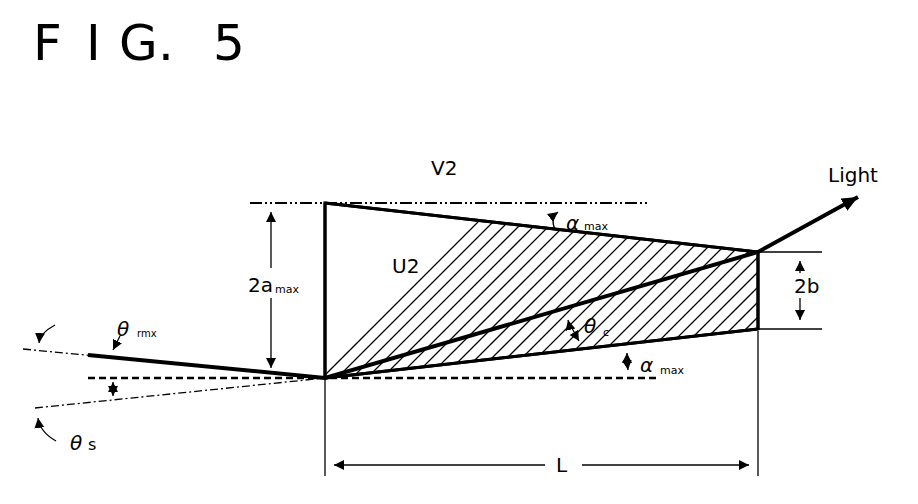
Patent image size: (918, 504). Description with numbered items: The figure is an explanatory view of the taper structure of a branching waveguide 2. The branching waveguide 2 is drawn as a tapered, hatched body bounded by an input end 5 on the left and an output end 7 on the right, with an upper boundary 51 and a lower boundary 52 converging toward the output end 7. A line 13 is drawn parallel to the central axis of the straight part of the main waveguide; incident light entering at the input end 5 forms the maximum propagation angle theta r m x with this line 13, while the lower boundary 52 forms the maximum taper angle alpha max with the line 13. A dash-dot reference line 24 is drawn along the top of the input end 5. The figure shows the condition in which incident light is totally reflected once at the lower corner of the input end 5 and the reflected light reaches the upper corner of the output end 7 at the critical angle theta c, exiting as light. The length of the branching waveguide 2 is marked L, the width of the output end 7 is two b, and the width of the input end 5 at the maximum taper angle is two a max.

The branching waveguide 2 is at (682, 252).
The input end 5 is at (325, 247).
The output end 7 is at (761, 308).
The line 13 is at (185, 379).
The reference plane line 24 is at (608, 202).
The upper inclined surface 51 is at (643, 238).
The lower boundary 52 is at (537, 355).